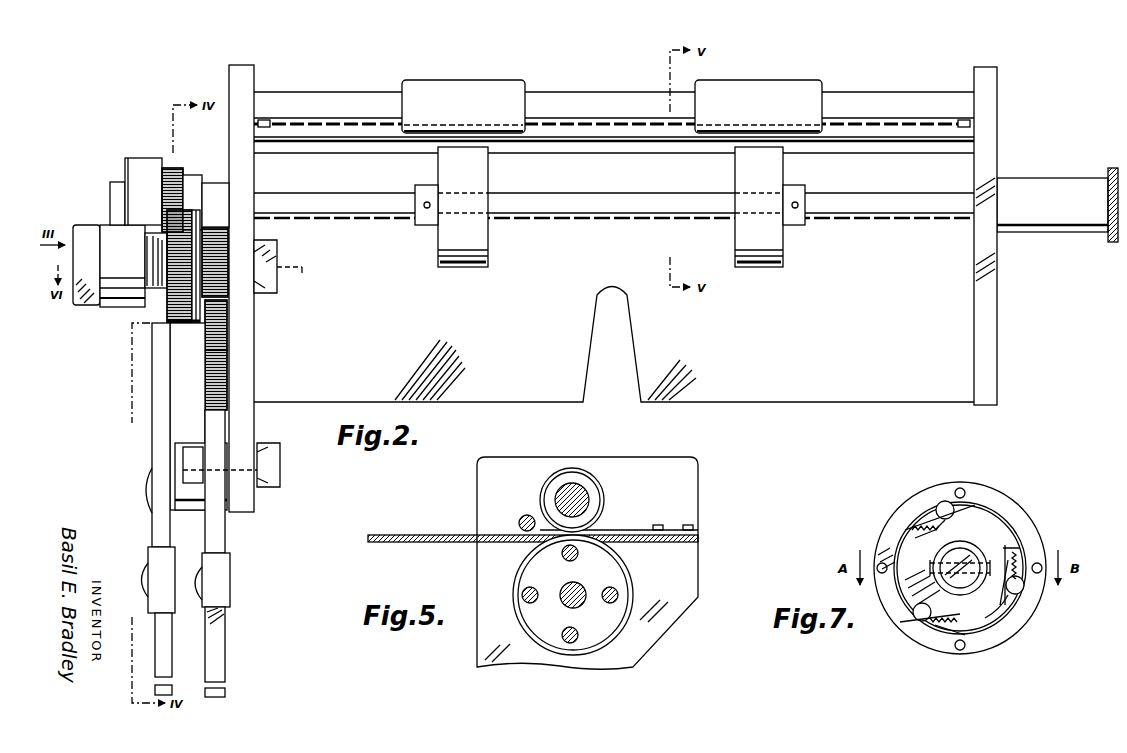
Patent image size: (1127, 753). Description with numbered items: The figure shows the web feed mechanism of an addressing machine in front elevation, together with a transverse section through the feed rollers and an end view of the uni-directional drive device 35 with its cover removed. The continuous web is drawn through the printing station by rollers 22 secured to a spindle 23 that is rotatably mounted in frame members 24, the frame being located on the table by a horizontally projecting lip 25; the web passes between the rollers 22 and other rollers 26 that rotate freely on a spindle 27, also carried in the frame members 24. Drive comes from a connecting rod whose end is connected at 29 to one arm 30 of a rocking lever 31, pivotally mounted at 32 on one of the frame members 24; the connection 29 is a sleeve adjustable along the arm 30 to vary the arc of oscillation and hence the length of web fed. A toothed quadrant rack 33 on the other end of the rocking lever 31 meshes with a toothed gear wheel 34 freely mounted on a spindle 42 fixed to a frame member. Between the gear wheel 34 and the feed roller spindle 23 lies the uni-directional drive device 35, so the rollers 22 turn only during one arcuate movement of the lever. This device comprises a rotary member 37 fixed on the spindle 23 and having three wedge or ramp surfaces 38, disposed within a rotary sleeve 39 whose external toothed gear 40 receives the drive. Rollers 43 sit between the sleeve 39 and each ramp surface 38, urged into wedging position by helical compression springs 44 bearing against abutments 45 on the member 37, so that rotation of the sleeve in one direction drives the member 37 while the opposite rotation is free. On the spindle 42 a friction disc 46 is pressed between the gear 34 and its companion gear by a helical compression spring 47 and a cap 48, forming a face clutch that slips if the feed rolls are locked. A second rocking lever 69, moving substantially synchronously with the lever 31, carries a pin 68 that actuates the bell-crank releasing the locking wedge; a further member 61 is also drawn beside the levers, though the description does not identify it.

In FIG. 2, the rollers 22 is at (465, 268).
In FIG. 5, the rollers 22 is at (520, 573).
In FIG. 2, the spindle 23 is at (899, 205).
In FIG. 5, the spindle 23 is at (585, 590).
In FIG. 7, the spindle 23 is at (958, 564).
In FIG. 2, the frame members 24 is at (240, 73).
In FIG. 5, the frame members 24 is at (695, 598).
In FIG. 5, the horizontally projecting lip 25 is at (425, 527).
In FIG. 2, the rollers 26 is at (460, 92).
In FIG. 5, the rollers 26 is at (605, 500).
In FIG. 2, the spindle 27 is at (897, 102).
In FIG. 5, the spindle 27 is at (560, 497).
In FIG. 2, the connection 29 is at (232, 585).
In FIG. 2, the arm 30 is at (218, 630).
In FIG. 2, the rocking lever 31 is at (215, 505).
In FIG. 2, the pivot 32 is at (195, 458).
In FIG. 2, the toothed quadrant rack 33 is at (212, 390).
In FIG. 2, the toothed gear wheel 34 is at (220, 283).
In FIG. 2, the uni-directional drive device 35 is at (125, 162).
In FIG. 7, the uni-directional drive device 35 is at (1025, 528).
In FIG. 7, the rotary member 37 is at (990, 620).
In FIG. 7, the wedge or ramp surfaces 38 is at (945, 540).
In FIG. 2, the rotary sleeve 39 is at (145, 160).
In FIG. 7, the rotary sleeve 39 is at (1030, 585).
In FIG. 2, the toothed gear 40 is at (174, 168).
In FIG. 2, the spindle 42 is at (275, 264).
In FIG. 7, the rollers 43 is at (1022, 592).
In FIG. 7, the helical compression springs 44 is at (930, 622).
In FIG. 7, the abutments 45 is at (905, 532).
In FIG. 2, the friction disc 46 is at (222, 322).
In FIG. 2, the helical compression spring 47 is at (152, 294).
In FIG. 2, the cap 48 is at (120, 238).
In FIG. 2, the plate 61 is at (170, 323).
In FIG. 2, the pin 68 is at (188, 345).
In FIG. 2, the second rocking lever 69 is at (165, 528).